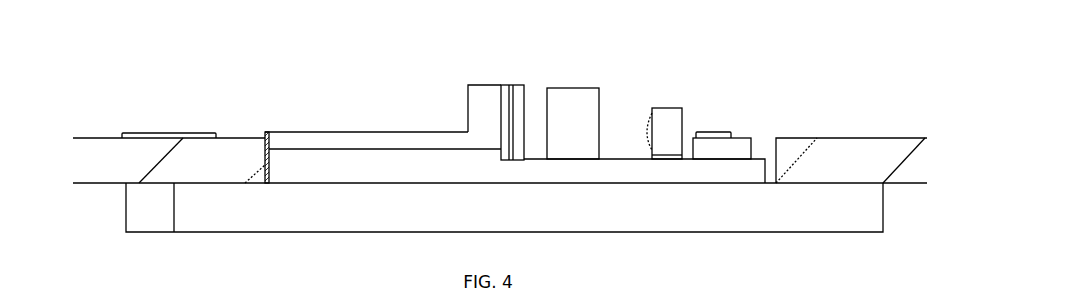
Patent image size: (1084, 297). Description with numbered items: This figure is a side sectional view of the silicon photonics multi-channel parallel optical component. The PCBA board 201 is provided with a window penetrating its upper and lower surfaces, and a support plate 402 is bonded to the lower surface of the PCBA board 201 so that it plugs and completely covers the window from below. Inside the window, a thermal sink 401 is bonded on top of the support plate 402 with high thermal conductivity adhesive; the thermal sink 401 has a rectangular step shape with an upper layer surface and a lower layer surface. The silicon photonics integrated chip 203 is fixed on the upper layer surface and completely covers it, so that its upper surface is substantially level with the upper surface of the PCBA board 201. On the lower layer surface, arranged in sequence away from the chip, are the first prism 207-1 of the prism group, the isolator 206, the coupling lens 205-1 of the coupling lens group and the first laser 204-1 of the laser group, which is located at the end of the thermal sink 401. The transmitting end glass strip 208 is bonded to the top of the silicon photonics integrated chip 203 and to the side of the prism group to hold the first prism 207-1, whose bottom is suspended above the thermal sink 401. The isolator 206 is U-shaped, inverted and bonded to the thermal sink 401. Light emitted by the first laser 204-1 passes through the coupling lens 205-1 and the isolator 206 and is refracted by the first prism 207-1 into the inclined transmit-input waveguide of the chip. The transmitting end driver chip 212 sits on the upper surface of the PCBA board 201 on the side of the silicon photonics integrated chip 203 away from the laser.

The PCBA board 201 is at (127, 167).
The transmitting end driver chip 212 is at (190, 132).
The thermal sink 401 is at (308, 163).
The silicon photonics integrated chip 203 is at (382, 143).
The transmitting end glass strip 208 is at (470, 115).
The first prism 207-1 is at (517, 80).
The isolator 206 is at (592, 85).
The coupling lens 205-1 is at (663, 107).
The first laser 204-1 is at (713, 130).
The support plate 402 is at (865, 212).